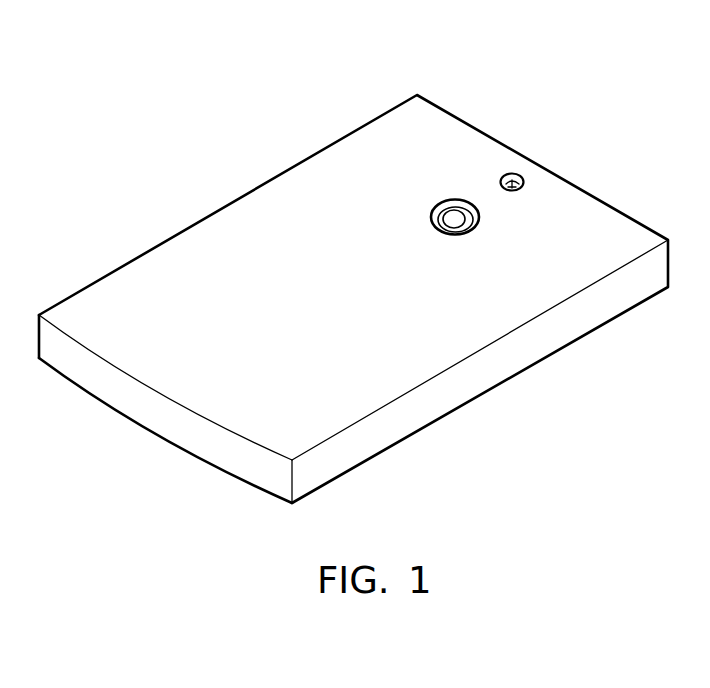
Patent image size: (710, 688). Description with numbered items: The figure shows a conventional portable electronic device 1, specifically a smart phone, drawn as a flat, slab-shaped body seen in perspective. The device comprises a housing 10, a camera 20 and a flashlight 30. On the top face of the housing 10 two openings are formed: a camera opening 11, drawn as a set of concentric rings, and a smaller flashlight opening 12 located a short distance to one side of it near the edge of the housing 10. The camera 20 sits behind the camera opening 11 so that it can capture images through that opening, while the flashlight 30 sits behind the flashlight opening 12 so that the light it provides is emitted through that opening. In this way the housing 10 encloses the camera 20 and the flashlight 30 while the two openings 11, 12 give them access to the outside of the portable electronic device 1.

The portable electronic device 1 is at (162, 63).
The housing 10 is at (555, 342).
The camera opening 11 is at (443, 205).
The flashlight opening 12 is at (506, 174).
The camera 20 is at (452, 218).
The flashlight 30 is at (519, 173).